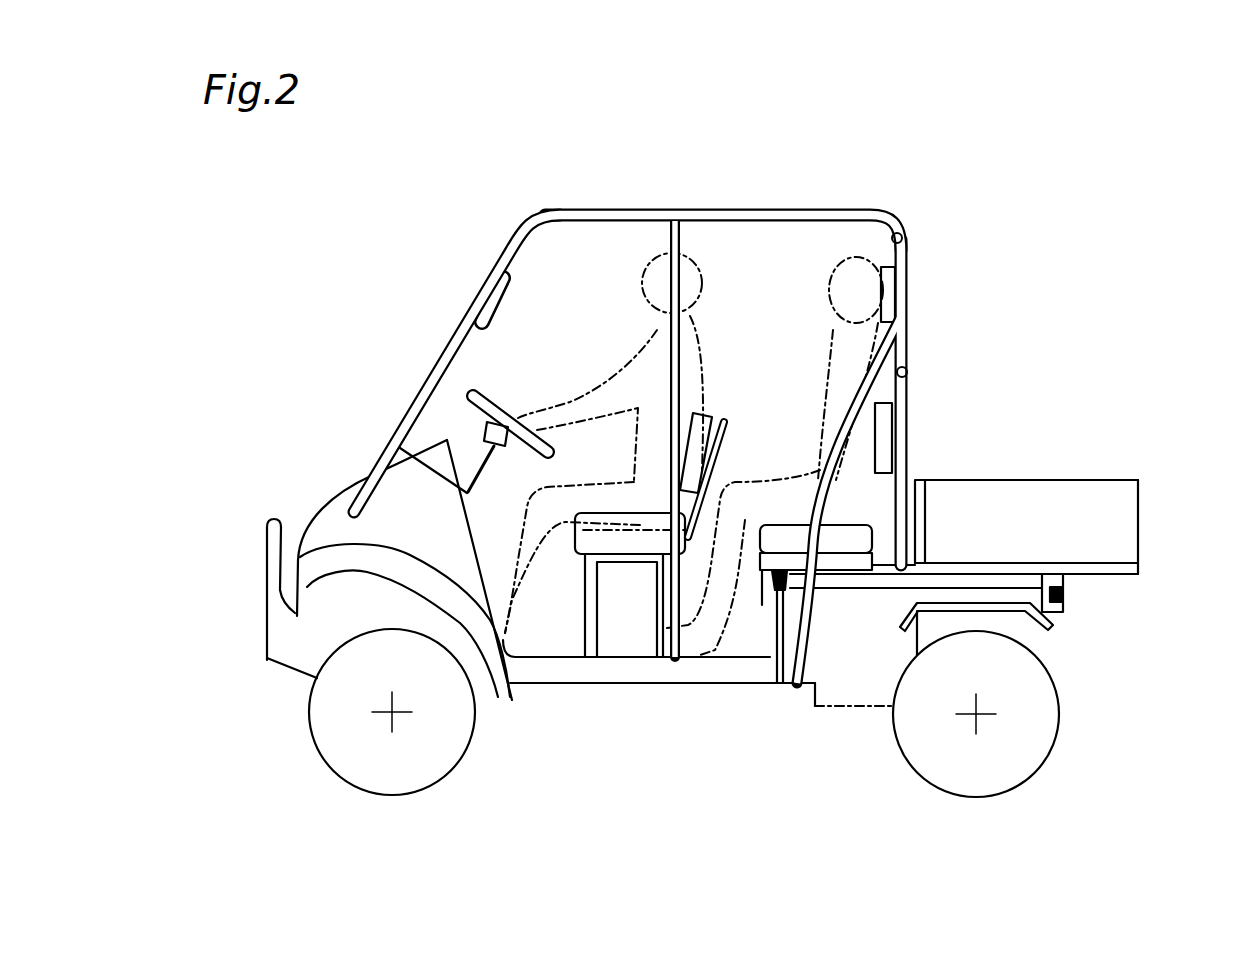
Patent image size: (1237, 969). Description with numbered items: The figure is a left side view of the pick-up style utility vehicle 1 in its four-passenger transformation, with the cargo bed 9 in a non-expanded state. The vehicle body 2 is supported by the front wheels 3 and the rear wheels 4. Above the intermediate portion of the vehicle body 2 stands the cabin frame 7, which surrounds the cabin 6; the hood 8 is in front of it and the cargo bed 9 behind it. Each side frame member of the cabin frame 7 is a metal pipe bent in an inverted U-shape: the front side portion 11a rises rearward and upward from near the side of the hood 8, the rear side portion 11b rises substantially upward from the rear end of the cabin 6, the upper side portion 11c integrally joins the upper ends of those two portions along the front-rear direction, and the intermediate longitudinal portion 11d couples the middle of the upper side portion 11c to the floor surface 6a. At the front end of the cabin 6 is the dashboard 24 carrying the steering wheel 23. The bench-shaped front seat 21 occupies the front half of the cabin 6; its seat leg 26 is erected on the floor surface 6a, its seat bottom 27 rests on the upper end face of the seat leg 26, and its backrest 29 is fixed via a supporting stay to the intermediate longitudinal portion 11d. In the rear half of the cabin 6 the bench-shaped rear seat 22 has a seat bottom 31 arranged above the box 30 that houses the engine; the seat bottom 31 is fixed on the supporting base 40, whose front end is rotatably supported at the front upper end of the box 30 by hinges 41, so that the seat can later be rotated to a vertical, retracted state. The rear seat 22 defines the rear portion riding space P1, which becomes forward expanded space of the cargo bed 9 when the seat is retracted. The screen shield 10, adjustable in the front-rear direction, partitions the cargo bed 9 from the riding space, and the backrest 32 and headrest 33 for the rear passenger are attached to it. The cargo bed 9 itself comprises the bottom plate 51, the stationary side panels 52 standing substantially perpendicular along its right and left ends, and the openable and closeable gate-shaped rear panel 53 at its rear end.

The pick-up style utility vehicle 1 is at (724, 472).
The vehicle body 2 is at (533, 715).
The front wheels 3 is at (367, 772).
The rear wheels 4 is at (977, 792).
The cabin 6 is at (585, 364).
The floor surface 6a is at (627, 660).
The cabin frame 7 is at (705, 394).
The hood 8 is at (312, 502).
The cargo bed 9 is at (1012, 493).
The screen shield 10 is at (903, 353).
The front side portion 11a is at (447, 337).
The rear side portion 11b is at (903, 313).
The upper side portion 11c is at (628, 207).
The intermediate longitudinal portion 11d is at (653, 290).
The bench-shaped front seat 21 is at (655, 481).
The bench-shaped rear seat 22 is at (804, 604).
The steering wheel 23 is at (465, 395).
The dashboard 24 is at (398, 443).
The seat leg 26 is at (592, 660).
The seat bottom 27 is at (593, 517).
The backrest 29 is at (702, 417).
The box 30 is at (823, 667).
The seat bottom 31 is at (830, 548).
The backrest 32 is at (888, 447).
The headrest 33 is at (890, 293).
The supporting base 40 is at (776, 590).
The hinges 41 is at (772, 685).
The bottom plate 51 is at (1130, 575).
The stationary side panels 52 is at (1074, 497).
The rear panel 53 is at (1140, 527).
The rear portion riding space P1 is at (807, 465).